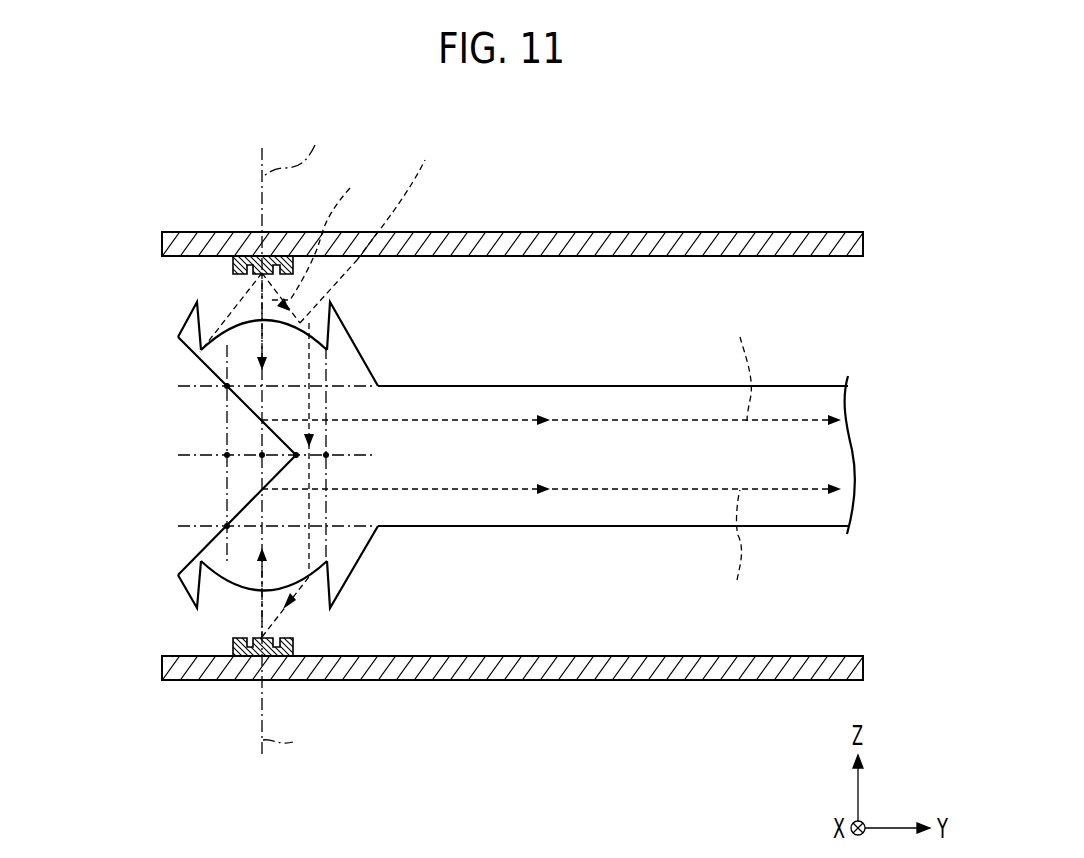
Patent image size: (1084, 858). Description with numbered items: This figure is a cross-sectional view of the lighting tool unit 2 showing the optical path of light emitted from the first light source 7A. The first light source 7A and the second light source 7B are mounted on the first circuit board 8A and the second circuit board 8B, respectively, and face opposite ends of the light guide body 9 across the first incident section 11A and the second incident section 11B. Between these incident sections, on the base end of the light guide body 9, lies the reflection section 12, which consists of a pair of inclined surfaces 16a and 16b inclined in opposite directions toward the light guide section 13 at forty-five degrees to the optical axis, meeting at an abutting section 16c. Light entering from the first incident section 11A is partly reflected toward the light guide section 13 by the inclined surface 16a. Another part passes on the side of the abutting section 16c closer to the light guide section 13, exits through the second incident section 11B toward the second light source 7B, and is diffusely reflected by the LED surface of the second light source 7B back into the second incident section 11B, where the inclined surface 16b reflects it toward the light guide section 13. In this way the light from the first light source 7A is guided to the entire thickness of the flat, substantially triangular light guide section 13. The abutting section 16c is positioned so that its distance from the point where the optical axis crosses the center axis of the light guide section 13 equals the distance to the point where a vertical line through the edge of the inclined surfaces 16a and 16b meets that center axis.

The lighting tool unit 2 is at (142, 172).
The first light source 7A is at (240, 259).
The second light source 7B is at (240, 656).
The first circuit board 8A is at (810, 235).
The second circuit board 8B is at (820, 658).
The light guide body 9 is at (529, 352).
The first incident section 11A is at (165, 319).
The second incident section 11B is at (168, 602).
The reflection section 12 is at (155, 460).
The light guide section 13 is at (640, 386).
The inclined surface 16a is at (198, 351).
The inclined surface 16b is at (195, 560).
The abutting section 16c is at (298, 449).